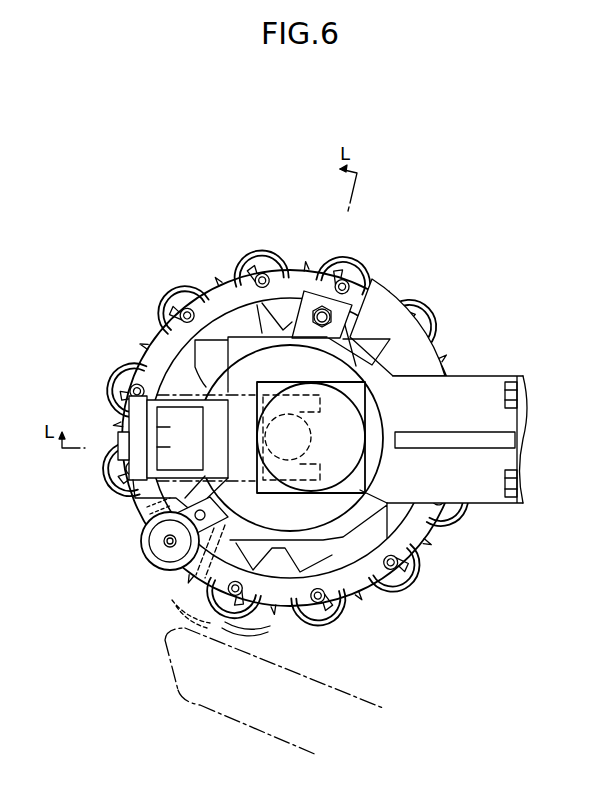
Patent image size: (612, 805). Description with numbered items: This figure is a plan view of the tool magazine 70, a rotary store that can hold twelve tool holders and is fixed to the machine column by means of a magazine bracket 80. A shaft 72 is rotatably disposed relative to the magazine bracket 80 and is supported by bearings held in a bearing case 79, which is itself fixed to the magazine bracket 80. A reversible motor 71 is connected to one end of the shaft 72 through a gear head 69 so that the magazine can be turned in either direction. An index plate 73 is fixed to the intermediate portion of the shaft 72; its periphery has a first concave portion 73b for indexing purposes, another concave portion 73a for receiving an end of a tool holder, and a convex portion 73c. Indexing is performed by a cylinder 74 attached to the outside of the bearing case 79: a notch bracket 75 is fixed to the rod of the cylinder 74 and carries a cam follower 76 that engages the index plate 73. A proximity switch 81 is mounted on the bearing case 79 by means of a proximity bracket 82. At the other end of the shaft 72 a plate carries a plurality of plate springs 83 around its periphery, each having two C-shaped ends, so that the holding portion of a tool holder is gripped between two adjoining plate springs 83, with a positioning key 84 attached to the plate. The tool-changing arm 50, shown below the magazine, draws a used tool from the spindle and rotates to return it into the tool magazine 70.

The arm 50 is at (338, 690).
The gear head 69 is at (360, 490).
The tool magazine 70 is at (150, 323).
The reversible motor 71 is at (363, 407).
The shaft 72 is at (313, 441).
The index plate 73 is at (222, 290).
The concave portion 73a is at (190, 298).
The first concave portion 73b is at (236, 328).
The convex portion 73c is at (270, 300).
The cylinder 74 is at (150, 507).
The notch bracket 75 is at (140, 415).
The cam follower 76 is at (190, 450).
The bearing case 79 is at (343, 367).
The magazine bracket 80 is at (470, 383).
The proximity switch 81 is at (319, 306).
The proximity bracket 82 is at (350, 306).
The plate spring 83 is at (143, 532).
The positioning key 84 is at (228, 518).